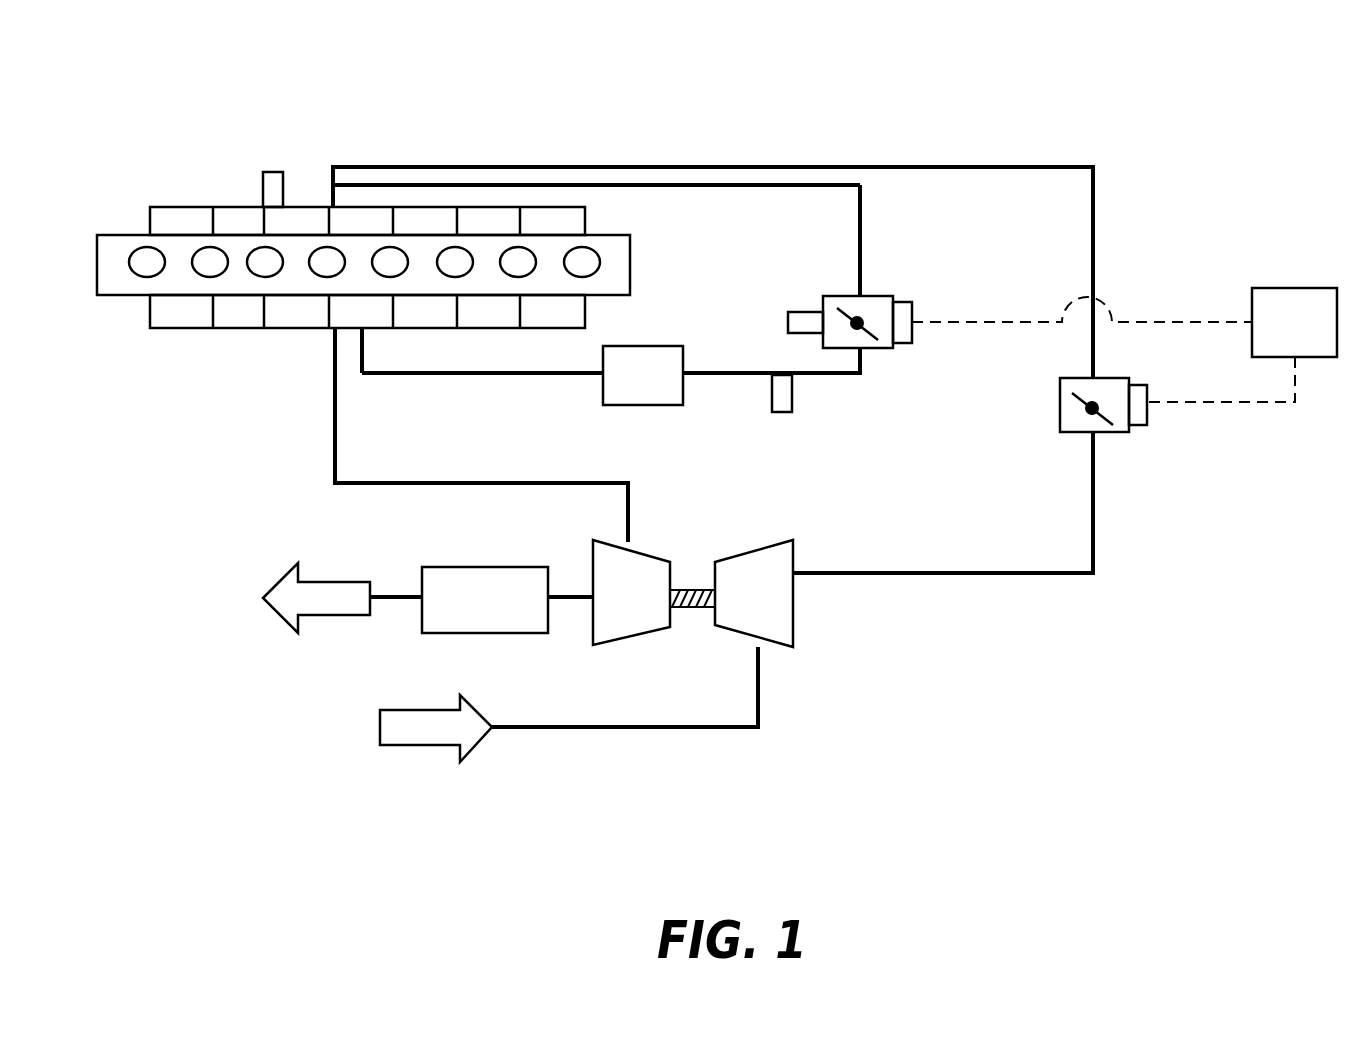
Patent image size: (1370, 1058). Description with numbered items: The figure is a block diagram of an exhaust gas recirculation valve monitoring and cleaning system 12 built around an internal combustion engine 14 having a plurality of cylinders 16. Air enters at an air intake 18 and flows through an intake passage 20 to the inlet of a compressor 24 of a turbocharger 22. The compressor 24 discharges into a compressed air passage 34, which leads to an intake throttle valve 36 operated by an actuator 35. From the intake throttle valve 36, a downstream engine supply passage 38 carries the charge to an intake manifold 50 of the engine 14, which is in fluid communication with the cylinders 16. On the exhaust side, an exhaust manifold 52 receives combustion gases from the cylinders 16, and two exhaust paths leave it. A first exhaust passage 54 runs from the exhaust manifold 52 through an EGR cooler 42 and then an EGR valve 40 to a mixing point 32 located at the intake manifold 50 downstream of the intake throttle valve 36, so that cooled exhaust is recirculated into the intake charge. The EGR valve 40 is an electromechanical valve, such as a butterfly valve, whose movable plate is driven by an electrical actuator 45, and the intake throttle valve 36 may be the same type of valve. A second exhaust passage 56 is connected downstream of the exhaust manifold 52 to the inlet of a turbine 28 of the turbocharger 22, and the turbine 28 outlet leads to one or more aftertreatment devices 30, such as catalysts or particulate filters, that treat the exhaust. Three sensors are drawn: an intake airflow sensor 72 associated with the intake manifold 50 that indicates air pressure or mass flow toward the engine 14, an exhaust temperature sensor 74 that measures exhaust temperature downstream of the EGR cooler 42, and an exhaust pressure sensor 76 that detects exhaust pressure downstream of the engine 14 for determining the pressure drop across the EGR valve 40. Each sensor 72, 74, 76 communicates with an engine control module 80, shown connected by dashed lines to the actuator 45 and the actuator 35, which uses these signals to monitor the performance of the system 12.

The EGR valve monitoring and cleaning system 12 is at (163, 140).
The internal combustion engine 14 is at (103, 283).
The cylinders 16 is at (622, 248).
The air intake 18 is at (380, 727).
The intake passage 20 is at (590, 729).
The turbocharger 22 is at (596, 667).
The compressor 24 is at (745, 560).
The turbine 28 is at (598, 553).
The aftertreatment devices 30 is at (422, 567).
The mixing point 32 is at (330, 185).
The compressed air passage 34 is at (1056, 576).
The actuator 35 is at (1147, 425).
The intake throttle valve 36 is at (1068, 432).
The engine supply passage 38 is at (890, 166).
The EGR valve 40 is at (898, 297).
The EGR cooler 42 is at (660, 346).
The electrical actuator 45 is at (912, 343).
The intake manifold 50 is at (230, 207).
The exhaust manifold 52 is at (170, 330).
The first exhaust passage 54 is at (830, 375).
The second exhaust passage 56 is at (405, 483).
The intake airflow sensor 72 is at (272, 172).
The exhaust temperature sensor 74 is at (772, 393).
The exhaust pressure sensor 76 is at (795, 312).
The engine control module 80 is at (1308, 357).